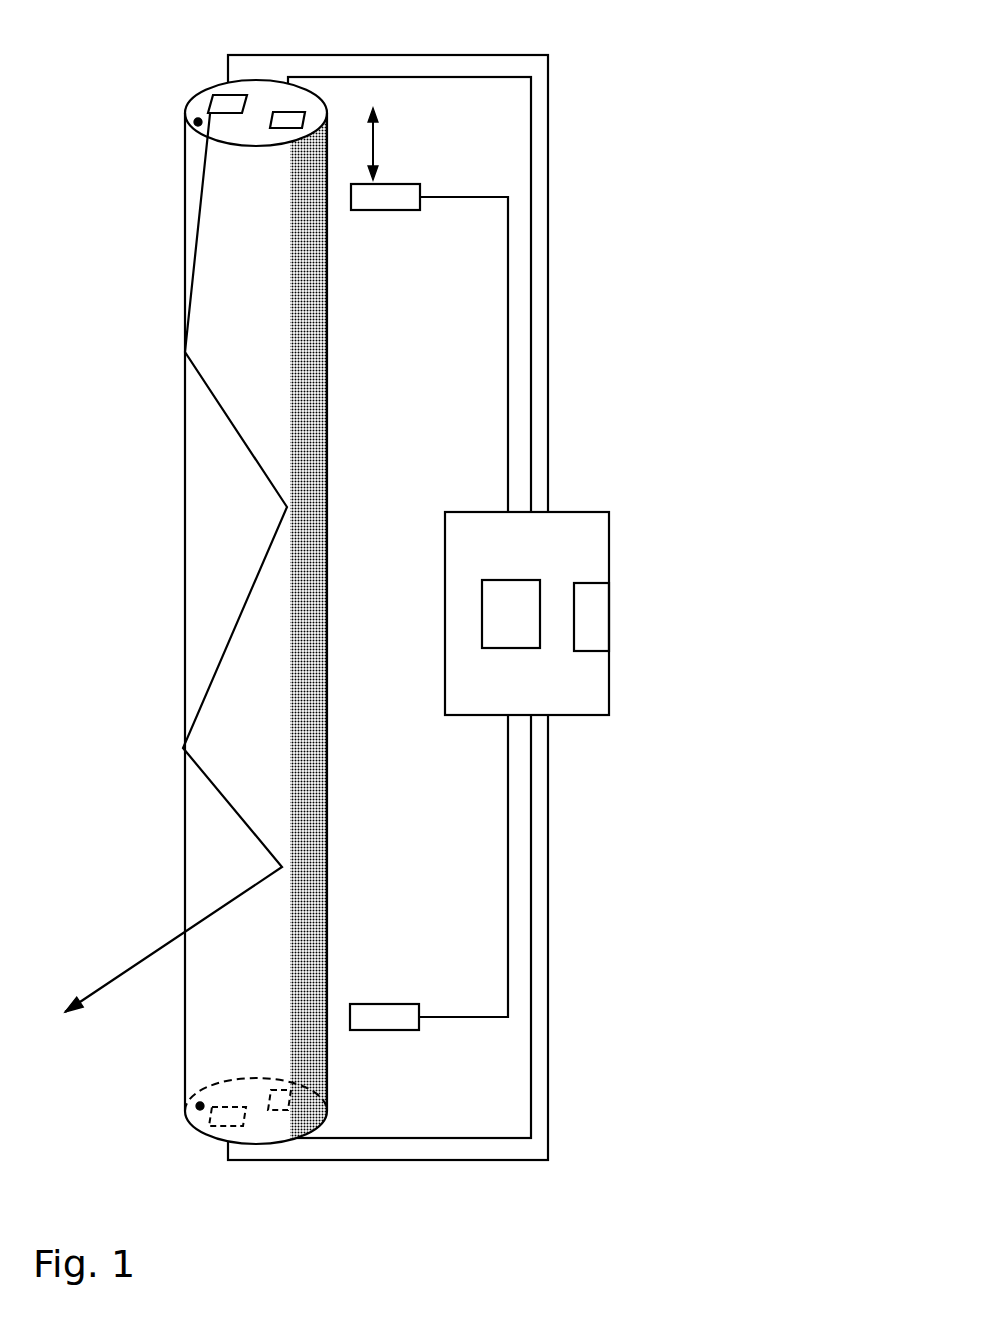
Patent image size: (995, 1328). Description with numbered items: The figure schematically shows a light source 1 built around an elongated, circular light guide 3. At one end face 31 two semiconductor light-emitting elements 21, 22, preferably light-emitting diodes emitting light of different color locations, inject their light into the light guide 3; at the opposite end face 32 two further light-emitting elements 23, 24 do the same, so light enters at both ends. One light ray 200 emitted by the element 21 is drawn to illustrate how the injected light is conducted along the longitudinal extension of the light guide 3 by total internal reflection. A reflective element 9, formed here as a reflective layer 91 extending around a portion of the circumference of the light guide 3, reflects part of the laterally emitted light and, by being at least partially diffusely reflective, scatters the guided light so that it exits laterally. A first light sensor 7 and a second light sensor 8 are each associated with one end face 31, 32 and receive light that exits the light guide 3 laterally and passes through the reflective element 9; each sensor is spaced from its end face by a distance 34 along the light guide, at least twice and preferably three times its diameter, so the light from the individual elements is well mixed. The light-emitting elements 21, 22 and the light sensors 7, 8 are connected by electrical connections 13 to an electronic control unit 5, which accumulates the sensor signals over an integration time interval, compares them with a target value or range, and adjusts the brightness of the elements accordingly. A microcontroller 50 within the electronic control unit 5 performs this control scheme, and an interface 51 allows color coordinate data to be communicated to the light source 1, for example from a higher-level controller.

The light source 1 is at (118, 939).
The light guide 3 is at (283, 612).
The electronic control unit 5 is at (557, 626).
The light sensor 7 is at (382, 210).
The second light sensor 8 is at (377, 1003).
The reflective element 9 is at (315, 425).
The reflective layer 91 is at (379, 626).
The electrical connections 13 is at (473, 198).
The semiconductor light-emitting element 21 is at (228, 100).
The semiconductor light-emitting element 22 is at (288, 118).
The light-emitting element 23 is at (217, 1127).
The light-emitting element 24 is at (268, 1113).
The end face 31 is at (195, 119).
The end face 32 is at (197, 1110).
The distance 34 is at (390, 144).
The microcontroller 50 is at (525, 579).
The interface 51 is at (598, 635).
The light ray 200 is at (130, 968).